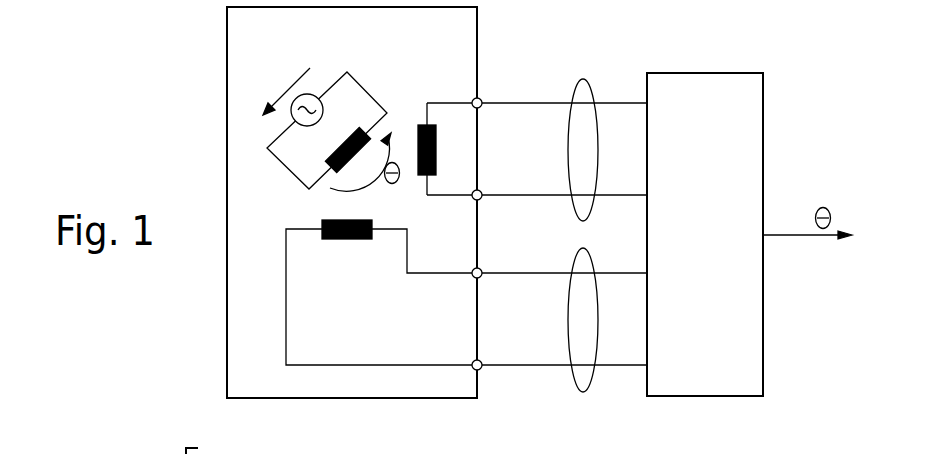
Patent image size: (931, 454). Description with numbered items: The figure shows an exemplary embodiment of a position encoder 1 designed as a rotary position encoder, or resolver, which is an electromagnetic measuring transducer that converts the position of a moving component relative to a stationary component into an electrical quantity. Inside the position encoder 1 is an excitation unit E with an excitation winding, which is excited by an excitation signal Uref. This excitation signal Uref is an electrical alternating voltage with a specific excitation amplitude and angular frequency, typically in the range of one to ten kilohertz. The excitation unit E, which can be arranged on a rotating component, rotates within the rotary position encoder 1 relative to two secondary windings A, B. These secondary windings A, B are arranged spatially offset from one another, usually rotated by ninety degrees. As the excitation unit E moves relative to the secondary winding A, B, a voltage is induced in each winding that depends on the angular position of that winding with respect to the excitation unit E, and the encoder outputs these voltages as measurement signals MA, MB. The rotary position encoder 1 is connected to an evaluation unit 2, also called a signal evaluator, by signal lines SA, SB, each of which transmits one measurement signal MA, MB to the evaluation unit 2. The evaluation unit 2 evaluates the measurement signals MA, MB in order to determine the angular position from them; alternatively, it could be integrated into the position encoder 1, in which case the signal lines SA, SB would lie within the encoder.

The position encoder 1 is at (227, 79).
The evaluation unit 2 is at (714, 238).
The excitation unit E is at (327, 130).
The excitation signal Uref is at (276, 87).
The secondary winding A is at (445, 149).
The secondary winding B is at (379, 292).
The measurement signal MA is at (559, 149).
The measurement signal MB is at (559, 319).
The signal line SA is at (589, 82).
The signal line SB is at (592, 381).